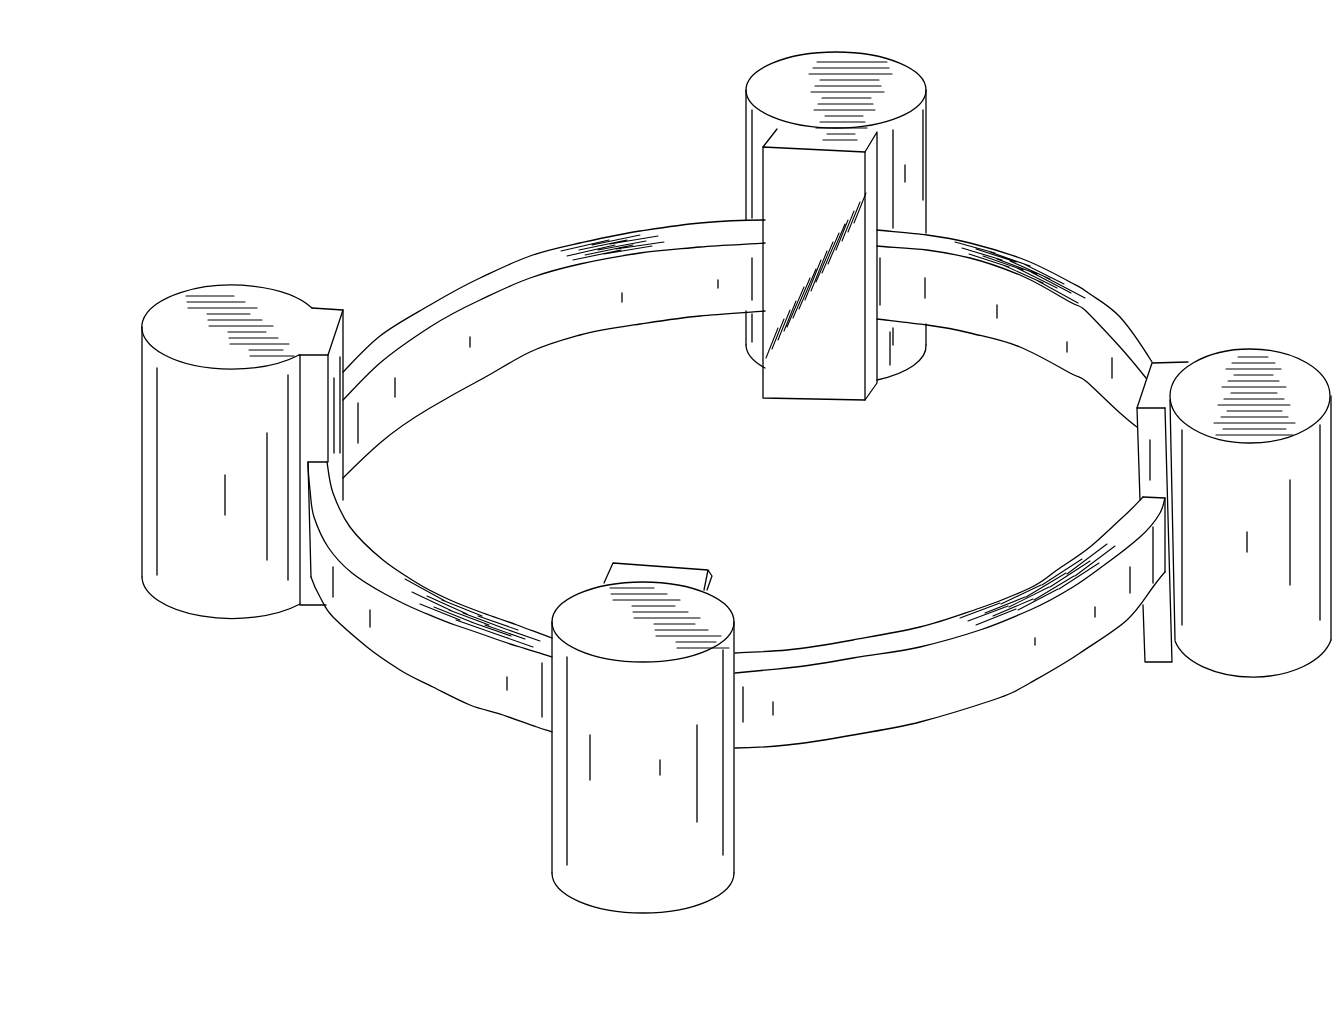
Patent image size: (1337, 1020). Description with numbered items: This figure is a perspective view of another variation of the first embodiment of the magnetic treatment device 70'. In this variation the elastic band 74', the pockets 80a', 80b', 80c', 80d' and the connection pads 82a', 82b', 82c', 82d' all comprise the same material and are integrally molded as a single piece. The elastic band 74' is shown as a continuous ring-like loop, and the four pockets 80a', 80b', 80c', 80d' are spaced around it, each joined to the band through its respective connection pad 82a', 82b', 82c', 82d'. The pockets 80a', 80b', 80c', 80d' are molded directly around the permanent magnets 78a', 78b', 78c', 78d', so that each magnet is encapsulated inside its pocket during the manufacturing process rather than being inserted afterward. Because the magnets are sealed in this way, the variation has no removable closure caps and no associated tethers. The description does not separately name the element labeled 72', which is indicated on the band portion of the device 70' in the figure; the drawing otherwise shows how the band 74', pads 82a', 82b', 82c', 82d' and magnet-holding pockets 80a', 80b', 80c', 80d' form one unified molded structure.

The positioning assembly 70' is at (736, 482).
The ring 72' is at (736, 479).
The elastic band 74' is at (554, 305).
The permanent magnet 78a' is at (638, 725).
The permanent magnet 78b' is at (1234, 511).
The permanent magnet 78c' is at (242, 452).
The permanent magnet 78d' is at (854, 226).
The pocket 80a' is at (687, 767).
The pocket 80b' is at (1250, 568).
The pocket 80c' is at (221, 502).
The pocket 80d' is at (875, 235).
The connection pad 82a' is at (708, 563).
The connection pad 82b' is at (1162, 545).
The connection pad 82c' is at (313, 486).
The connection pad 82d' is at (903, 251).